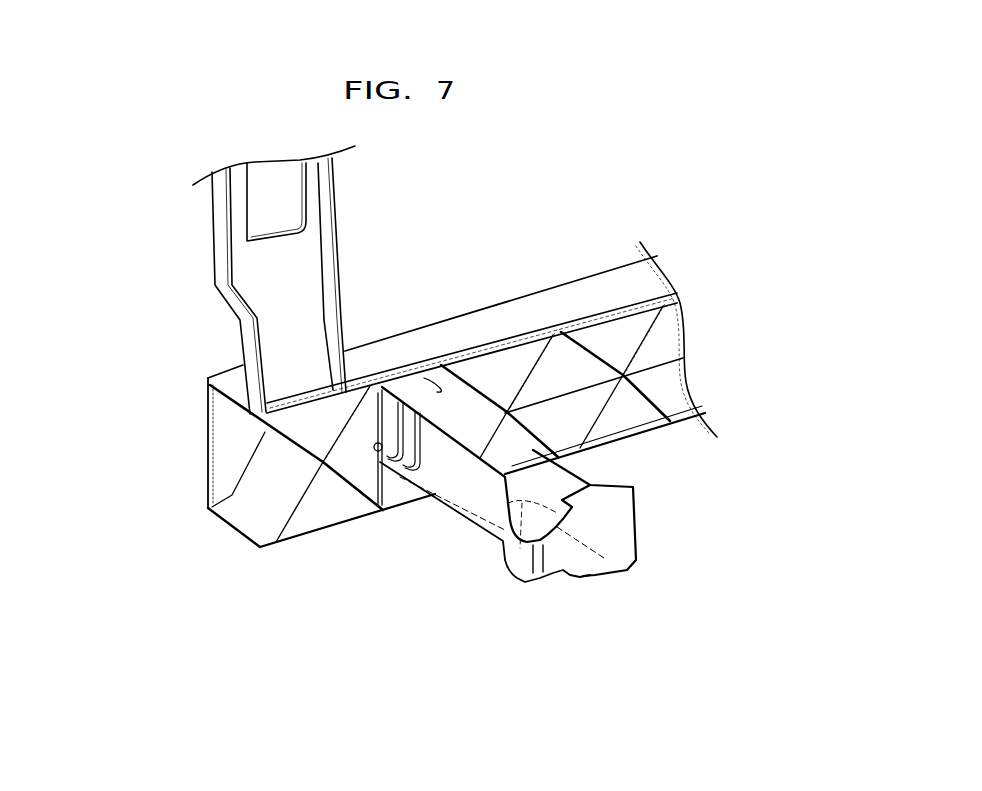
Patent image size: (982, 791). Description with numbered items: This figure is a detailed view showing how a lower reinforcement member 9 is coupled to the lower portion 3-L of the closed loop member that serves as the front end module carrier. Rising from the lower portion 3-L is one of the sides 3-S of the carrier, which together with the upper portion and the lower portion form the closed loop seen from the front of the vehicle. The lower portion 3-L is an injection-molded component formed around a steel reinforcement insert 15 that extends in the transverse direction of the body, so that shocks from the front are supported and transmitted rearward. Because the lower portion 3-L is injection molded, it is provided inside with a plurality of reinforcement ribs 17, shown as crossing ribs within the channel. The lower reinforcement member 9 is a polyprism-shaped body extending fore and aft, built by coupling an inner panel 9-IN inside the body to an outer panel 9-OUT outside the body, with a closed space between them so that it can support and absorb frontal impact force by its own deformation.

The side of closed loop member 3-S is at (233, 223).
The lower portion of closed loop member 3-L is at (318, 517).
The reinforcement insert 15 is at (458, 328).
The reinforcement ribs 17 is at (563, 377).
The lower reinforcement member 9 is at (512, 551).
The outer panel 9-OUT is at (472, 491).
The inner panel 9-IN is at (589, 567).